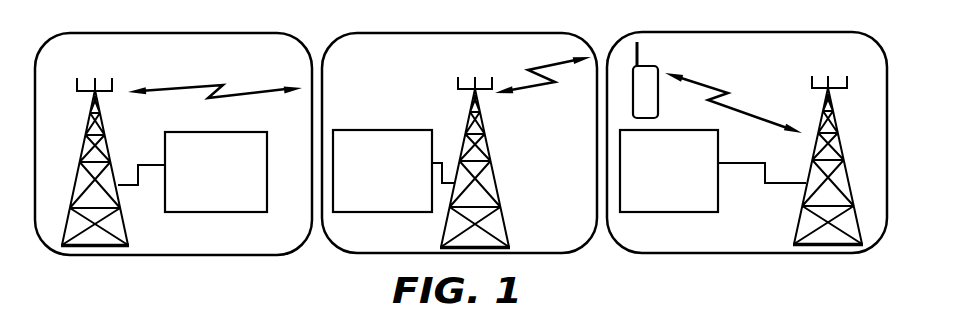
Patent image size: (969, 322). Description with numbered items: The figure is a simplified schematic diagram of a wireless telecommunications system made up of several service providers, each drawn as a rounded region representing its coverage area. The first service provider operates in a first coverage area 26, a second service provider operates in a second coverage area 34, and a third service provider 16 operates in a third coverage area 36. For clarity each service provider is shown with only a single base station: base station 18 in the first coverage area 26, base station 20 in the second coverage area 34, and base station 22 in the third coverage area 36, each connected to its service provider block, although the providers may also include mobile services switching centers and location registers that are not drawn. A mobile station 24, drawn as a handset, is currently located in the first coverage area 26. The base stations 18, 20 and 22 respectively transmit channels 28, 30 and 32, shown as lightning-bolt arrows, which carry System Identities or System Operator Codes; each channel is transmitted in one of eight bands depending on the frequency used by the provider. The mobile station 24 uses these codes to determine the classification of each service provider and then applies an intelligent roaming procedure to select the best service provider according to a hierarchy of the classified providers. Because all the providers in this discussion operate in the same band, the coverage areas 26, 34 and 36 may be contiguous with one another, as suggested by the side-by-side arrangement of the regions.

The third service provider 16 is at (192, 172).
The base station 18 is at (843, 148).
The base station 20 is at (487, 152).
The base station 22 is at (82, 152).
The mobile station 24 is at (655, 65).
The first coverage area 26 is at (743, 56).
The channel 28 is at (762, 117).
The channel 30 is at (522, 82).
The channel 32 is at (260, 87).
The second coverage area 34 is at (455, 57).
The third coverage area 36 is at (183, 59).